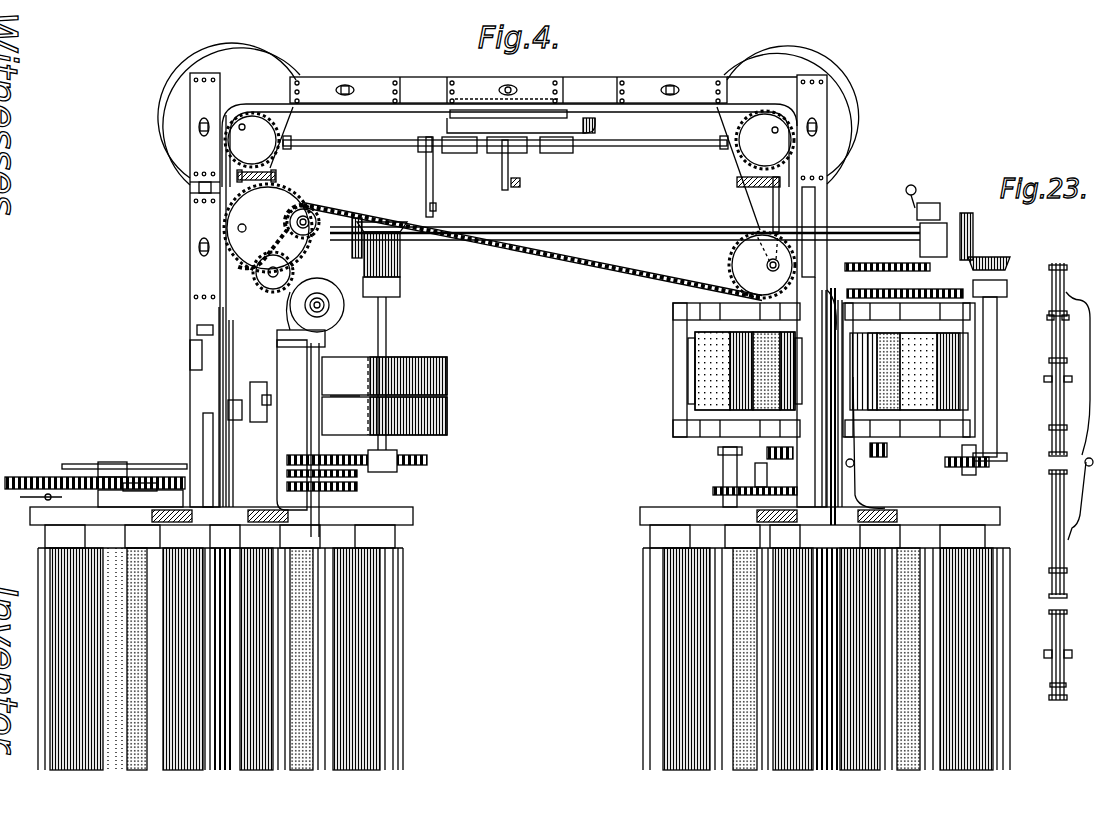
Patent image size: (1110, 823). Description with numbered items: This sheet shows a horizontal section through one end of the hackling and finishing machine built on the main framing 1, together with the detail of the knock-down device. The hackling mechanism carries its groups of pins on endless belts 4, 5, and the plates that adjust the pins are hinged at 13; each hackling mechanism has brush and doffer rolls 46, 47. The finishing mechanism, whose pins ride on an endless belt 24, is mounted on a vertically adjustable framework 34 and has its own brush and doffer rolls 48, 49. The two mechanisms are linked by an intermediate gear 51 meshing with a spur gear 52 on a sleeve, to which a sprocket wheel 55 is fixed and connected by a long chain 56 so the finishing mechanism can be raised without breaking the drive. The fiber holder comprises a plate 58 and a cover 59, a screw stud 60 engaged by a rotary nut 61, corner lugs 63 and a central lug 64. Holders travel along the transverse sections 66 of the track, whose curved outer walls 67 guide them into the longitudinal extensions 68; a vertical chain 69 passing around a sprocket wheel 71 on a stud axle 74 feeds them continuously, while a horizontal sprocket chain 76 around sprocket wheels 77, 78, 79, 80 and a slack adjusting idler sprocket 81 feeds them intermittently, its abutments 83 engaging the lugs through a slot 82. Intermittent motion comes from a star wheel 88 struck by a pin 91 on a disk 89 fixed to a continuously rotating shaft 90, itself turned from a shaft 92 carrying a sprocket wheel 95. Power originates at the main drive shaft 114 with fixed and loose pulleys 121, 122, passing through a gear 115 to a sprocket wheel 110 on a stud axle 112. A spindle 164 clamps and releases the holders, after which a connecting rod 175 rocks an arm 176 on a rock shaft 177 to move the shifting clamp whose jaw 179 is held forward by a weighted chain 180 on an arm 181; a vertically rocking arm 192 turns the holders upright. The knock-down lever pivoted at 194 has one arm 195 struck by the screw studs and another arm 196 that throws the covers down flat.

In FIG. 4, the main framing 1 is at (372, 526).
In FIG. 4, the endless belt 4 is at (175, 630).
In FIG. 4, the endless belt 5 is at (263, 635).
In FIG. 4, the hinge 13 is at (92, 481).
In FIG. 4, the endless belt 24 is at (790, 387).
In FIG. 4, the framework 34 is at (690, 312).
In FIG. 4, the brush roll 46 is at (143, 733).
In FIG. 4, the doffer roll 47 is at (375, 724).
In FIG. 4, the brush roll 48 is at (787, 380).
In FIG. 4, the doffer roll 49 is at (767, 357).
In FIG. 4, the intermediate gear 51 is at (773, 475).
In FIG. 4, the spur gear 52 is at (713, 490).
In FIG. 4, the sprocket wheel 55 is at (722, 458).
In FIG. 4, the chain 56 is at (722, 466).
In FIG. 23, the plate 58 is at (1037, 484).
In FIG. 23, the cover 59 is at (1077, 484).
In FIG. 4, the screw stud 60 is at (350, 88).
In FIG. 23, the screw stud 60 is at (1068, 297).
In FIG. 23, the rotary nut 61 is at (1071, 654).
In FIG. 23, the exterior lugs 63 is at (1066, 697).
In FIG. 23, the exterior lug 64 is at (1052, 656).
In FIG. 4, the transverse sections of the track 66 is at (587, 78).
In FIG. 4, the curved outer walls 67 is at (168, 123).
In FIG. 4, the longitudinal extensions 68 is at (193, 376).
In FIG. 4, the chain 69 is at (226, 480).
In FIG. 4, the sprocket wheel 71 is at (234, 372).
In FIG. 4, the stud axle 74 is at (270, 408).
In FIG. 4, the sprocket chain 76 is at (600, 262).
In FIG. 4, the sprocket wheel 77 is at (757, 236).
In FIG. 4, the sprocket wheel 78 is at (765, 140).
In FIG. 4, the sprocket wheel 79 is at (252, 140).
In FIG. 4, the sprocket wheel 80 is at (236, 256).
In FIG. 4, the slack adjusting idler sprocket 81 is at (308, 218).
In FIG. 4, the slot 82 is at (428, 90).
In FIG. 4, the abutments 83 is at (500, 248).
In FIG. 4, the star wheel 88 is at (294, 270).
In FIG. 4, the disk 89 is at (317, 341).
In FIG. 4, the continuously rotating shaft 90 is at (324, 306).
In FIG. 4, the pin 91 is at (288, 306).
In FIG. 4, the shaft 92 is at (320, 440).
In FIG. 4, the sprocket wheel 95 is at (335, 552).
In FIG. 4, the sprocket wheel 110 is at (70, 466).
In FIG. 4, the stud axle 112 is at (113, 466).
In FIG. 4, the main drive shaft 114 is at (388, 335).
In FIG. 4, the gear 115 is at (428, 465).
In FIG. 4, the fixed pulley 121 is at (450, 378).
In FIG. 4, the loose pulley 122 is at (450, 412).
In FIG. 4, the spindle 164 is at (508, 87).
In FIG. 4, the connecting rod 175 is at (437, 207).
In FIG. 4, the arm 176 is at (427, 182).
In FIG. 4, the rock shaft 177 is at (363, 146).
In FIG. 4, the jaw 179 is at (593, 125).
In FIG. 4, the weighted chain 180 is at (522, 184).
In FIG. 4, the arm 181 is at (510, 160).
In FIG. 4, the vertically rocking arm 192 is at (200, 333).
In FIG. 4, the pivot 194 is at (855, 465).
In FIG. 23, the pivot 194 is at (1088, 465).
In FIG. 4, the arm 195 is at (905, 512).
In FIG. 23, the arm 195 is at (1072, 522).
In FIG. 4, the arm 196 is at (818, 406).
In FIG. 23, the arm 196 is at (1080, 398).